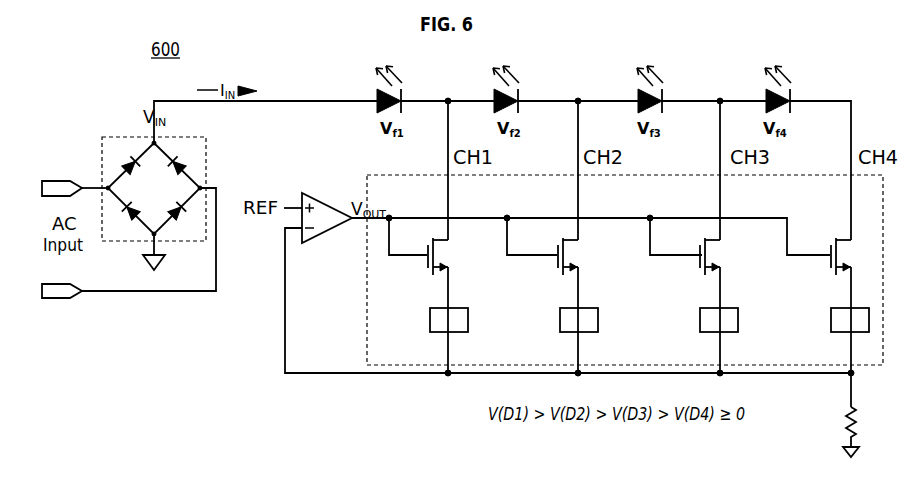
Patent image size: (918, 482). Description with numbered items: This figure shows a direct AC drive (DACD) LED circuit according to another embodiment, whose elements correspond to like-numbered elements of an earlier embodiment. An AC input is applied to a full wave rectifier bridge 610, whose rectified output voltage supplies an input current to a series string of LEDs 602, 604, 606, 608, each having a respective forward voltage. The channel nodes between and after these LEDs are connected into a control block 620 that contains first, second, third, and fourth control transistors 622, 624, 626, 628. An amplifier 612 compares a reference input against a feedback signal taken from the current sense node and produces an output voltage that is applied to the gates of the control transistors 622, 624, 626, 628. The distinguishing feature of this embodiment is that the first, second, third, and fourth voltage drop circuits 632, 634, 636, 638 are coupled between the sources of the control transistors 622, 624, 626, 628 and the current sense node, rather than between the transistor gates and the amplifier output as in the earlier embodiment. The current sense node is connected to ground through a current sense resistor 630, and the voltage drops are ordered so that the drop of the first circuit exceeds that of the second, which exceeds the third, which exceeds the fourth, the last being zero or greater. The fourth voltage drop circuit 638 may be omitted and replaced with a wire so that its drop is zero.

The LED 602 is at (377, 92).
The LED 604 is at (494, 92).
The LED 606 is at (638, 92).
The LED 608 is at (766, 92).
The full wave rectifier bridge 610 is at (133, 137).
The amplifier 612 is at (302, 193).
The control circuit 620 is at (368, 182).
The first control transistor 622 is at (427, 266).
The second control transistor 624 is at (557, 266).
The third control transistor 626 is at (702, 266).
The fourth control transistor 628 is at (830, 266).
The current sense resistor 630 is at (847, 412).
The first voltage drop circuit 632 is at (435, 333).
The second voltage drop circuit 634 is at (575, 333).
The third voltage drop circuit 636 is at (713, 333).
The fourth voltage drop circuit 638 is at (840, 333).